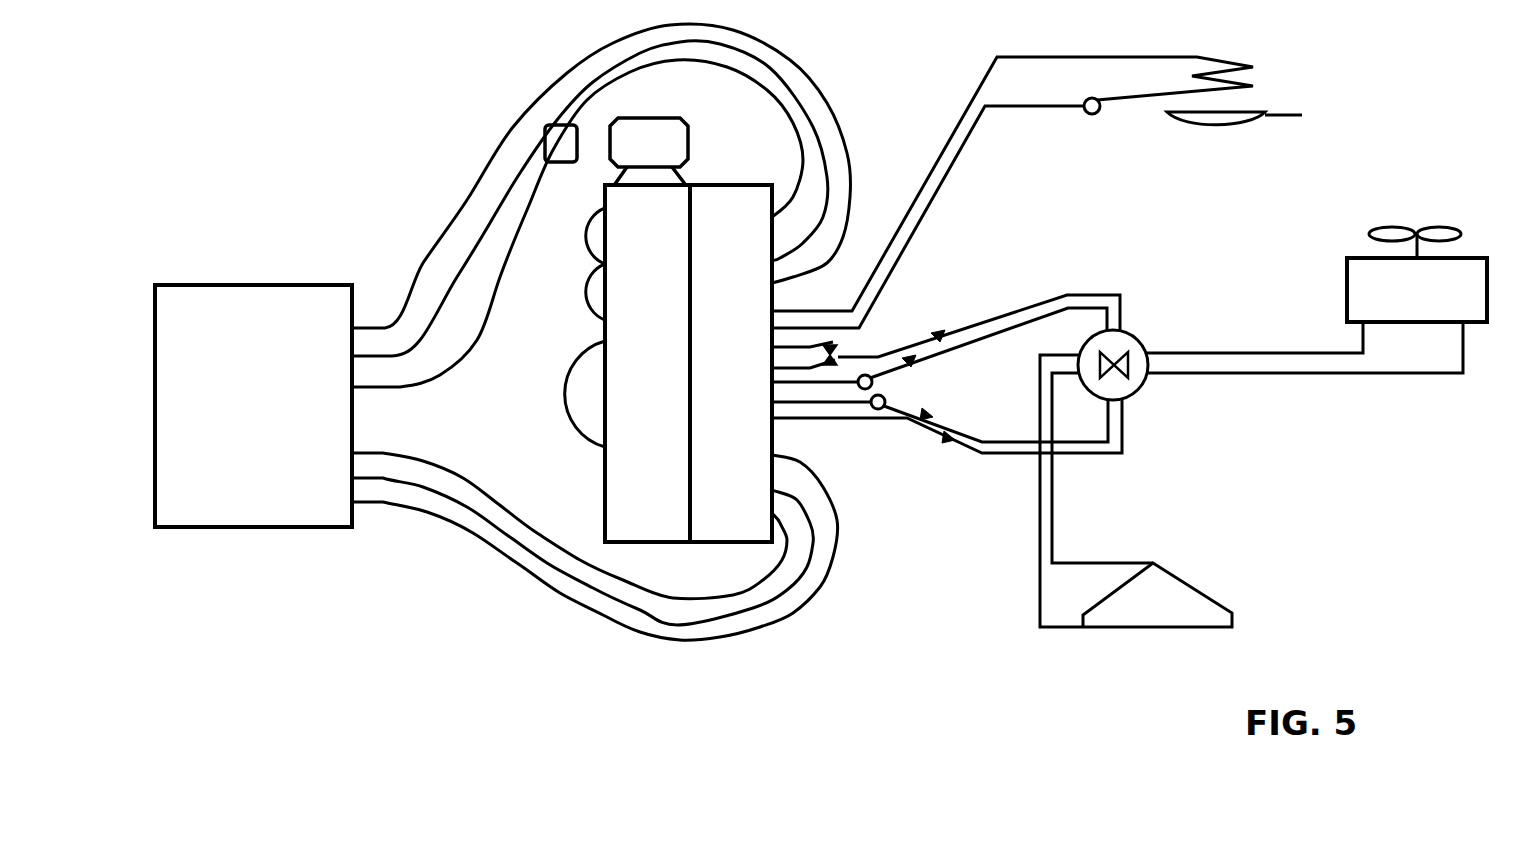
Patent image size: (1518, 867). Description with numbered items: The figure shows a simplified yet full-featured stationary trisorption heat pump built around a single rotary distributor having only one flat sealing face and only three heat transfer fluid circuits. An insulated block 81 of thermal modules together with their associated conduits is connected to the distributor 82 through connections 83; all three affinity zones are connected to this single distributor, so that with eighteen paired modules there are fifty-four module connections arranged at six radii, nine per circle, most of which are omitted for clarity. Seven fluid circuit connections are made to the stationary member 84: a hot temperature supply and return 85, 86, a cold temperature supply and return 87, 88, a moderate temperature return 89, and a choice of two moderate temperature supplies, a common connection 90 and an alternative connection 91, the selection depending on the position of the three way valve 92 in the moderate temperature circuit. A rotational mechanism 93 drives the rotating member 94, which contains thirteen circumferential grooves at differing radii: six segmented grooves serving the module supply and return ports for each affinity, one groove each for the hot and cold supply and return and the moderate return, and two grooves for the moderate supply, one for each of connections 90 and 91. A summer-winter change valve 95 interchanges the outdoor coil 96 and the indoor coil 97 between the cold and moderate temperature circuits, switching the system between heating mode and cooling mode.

The insulated block 81 is at (243, 527).
The distributor 82 is at (655, 542).
The connections 83 is at (392, 387).
The stationary member 84 is at (720, 185).
The hot temperature supply connection 85 is at (800, 311).
The hot temperature return connection 86 is at (874, 302).
The cold temperature supply connection 87 is at (815, 418).
The cold temperature return connection 88 is at (772, 399).
The moderate temperature return connection 89 is at (772, 378).
The common moderate temperature supply connection 90 is at (772, 332).
The alternative moderate temperature supply connection 91 is at (772, 358).
The three way valve 92 is at (840, 352).
The rotational mechanism 93 is at (647, 118).
The rotating member 94 is at (593, 345).
The summer-winter change valve 95 is at (1138, 341).
The outdoor coil 96 is at (1347, 300).
The indoor coil 97 is at (1185, 584).